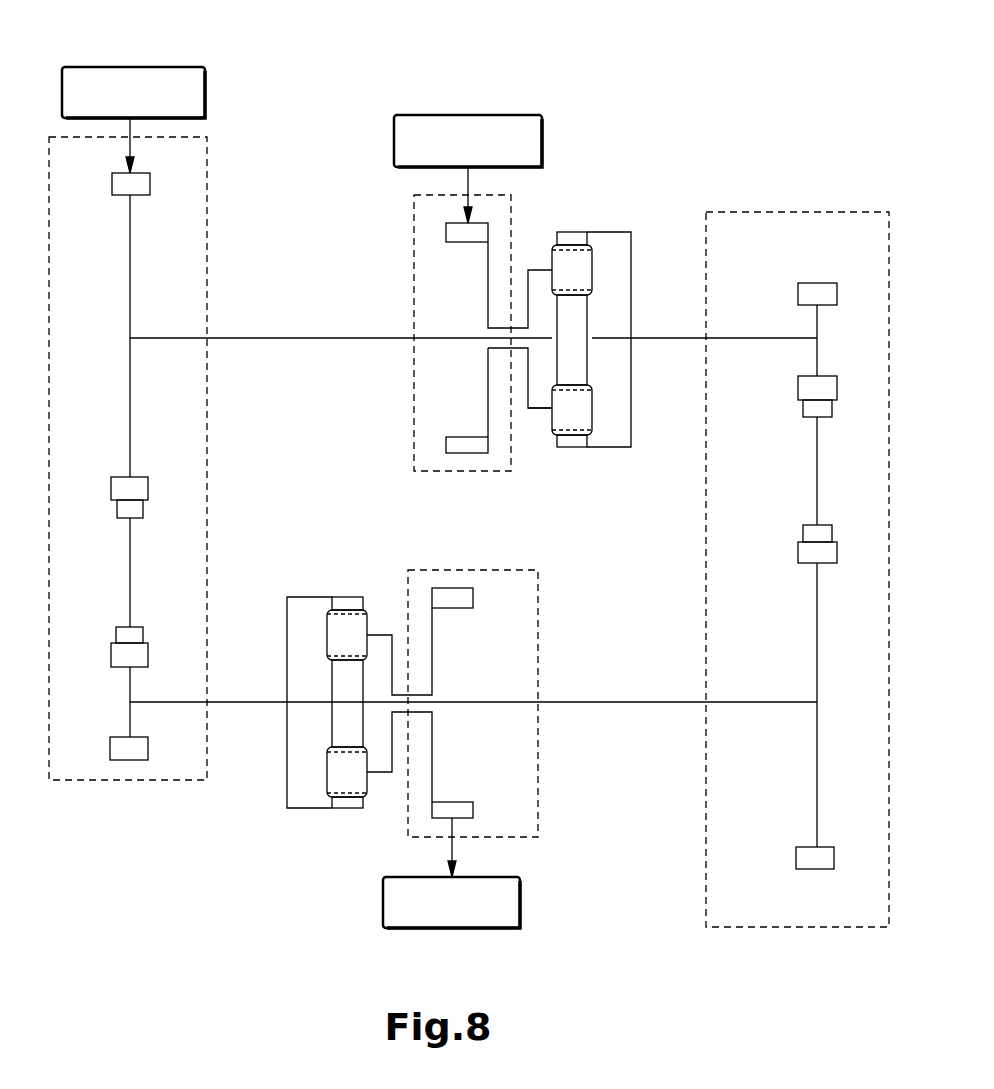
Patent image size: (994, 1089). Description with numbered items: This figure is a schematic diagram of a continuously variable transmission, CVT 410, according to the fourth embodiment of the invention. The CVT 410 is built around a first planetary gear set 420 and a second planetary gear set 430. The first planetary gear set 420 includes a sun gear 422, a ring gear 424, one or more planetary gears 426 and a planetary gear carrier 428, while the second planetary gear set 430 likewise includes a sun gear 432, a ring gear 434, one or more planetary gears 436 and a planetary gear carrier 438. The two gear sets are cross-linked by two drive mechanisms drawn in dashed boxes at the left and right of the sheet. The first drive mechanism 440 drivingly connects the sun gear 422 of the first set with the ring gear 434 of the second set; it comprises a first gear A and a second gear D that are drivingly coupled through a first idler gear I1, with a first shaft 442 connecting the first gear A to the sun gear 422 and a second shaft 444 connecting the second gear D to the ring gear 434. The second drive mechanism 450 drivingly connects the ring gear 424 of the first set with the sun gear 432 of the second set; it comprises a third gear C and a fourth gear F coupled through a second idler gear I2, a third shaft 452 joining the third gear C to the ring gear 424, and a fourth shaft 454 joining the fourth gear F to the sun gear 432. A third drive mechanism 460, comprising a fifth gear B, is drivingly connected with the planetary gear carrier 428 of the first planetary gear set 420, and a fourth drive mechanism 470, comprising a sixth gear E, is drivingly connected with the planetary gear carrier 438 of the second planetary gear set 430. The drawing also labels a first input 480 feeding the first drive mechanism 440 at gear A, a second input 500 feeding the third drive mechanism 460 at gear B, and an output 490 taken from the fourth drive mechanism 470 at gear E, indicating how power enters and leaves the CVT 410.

The continuously variable transmission 410 is at (462, 58).
The first planetary gear set 420 is at (618, 299).
The sun gear 422 is at (578, 348).
The ring gear 424 is at (573, 236).
The planetary gears 426 is at (583, 408).
The planetary gear carrier 428 is at (537, 410).
The second planetary gear set 430 is at (297, 723).
The sun gear 432 is at (337, 713).
The ring gear 434 is at (347, 808).
The planetary gears 436 is at (332, 778).
The planetary gear carrier 438 is at (385, 632).
The first drive mechanism 440 is at (208, 148).
The first shaft 442 is at (195, 337).
The second shaft 444 is at (178, 700).
The second drive mechanism 450 is at (815, 212).
The third shaft 452 is at (692, 337).
The fourth shaft 454 is at (598, 701).
The third drive mechanism 460 is at (413, 425).
The fourth drive mechanism 470 is at (540, 722).
The input 1 480 is at (176, 67).
The output 490 is at (495, 928).
The input 2 500 is at (394, 143).
The first gear A is at (112, 183).
The fifth gear B is at (446, 237).
The third gear C is at (798, 293).
The second gear D is at (110, 745).
The sixth gear E is at (473, 810).
The fourth gear F is at (796, 857).
The first idler gear I1 is at (137, 633).
The second idler gear I2 is at (813, 535).